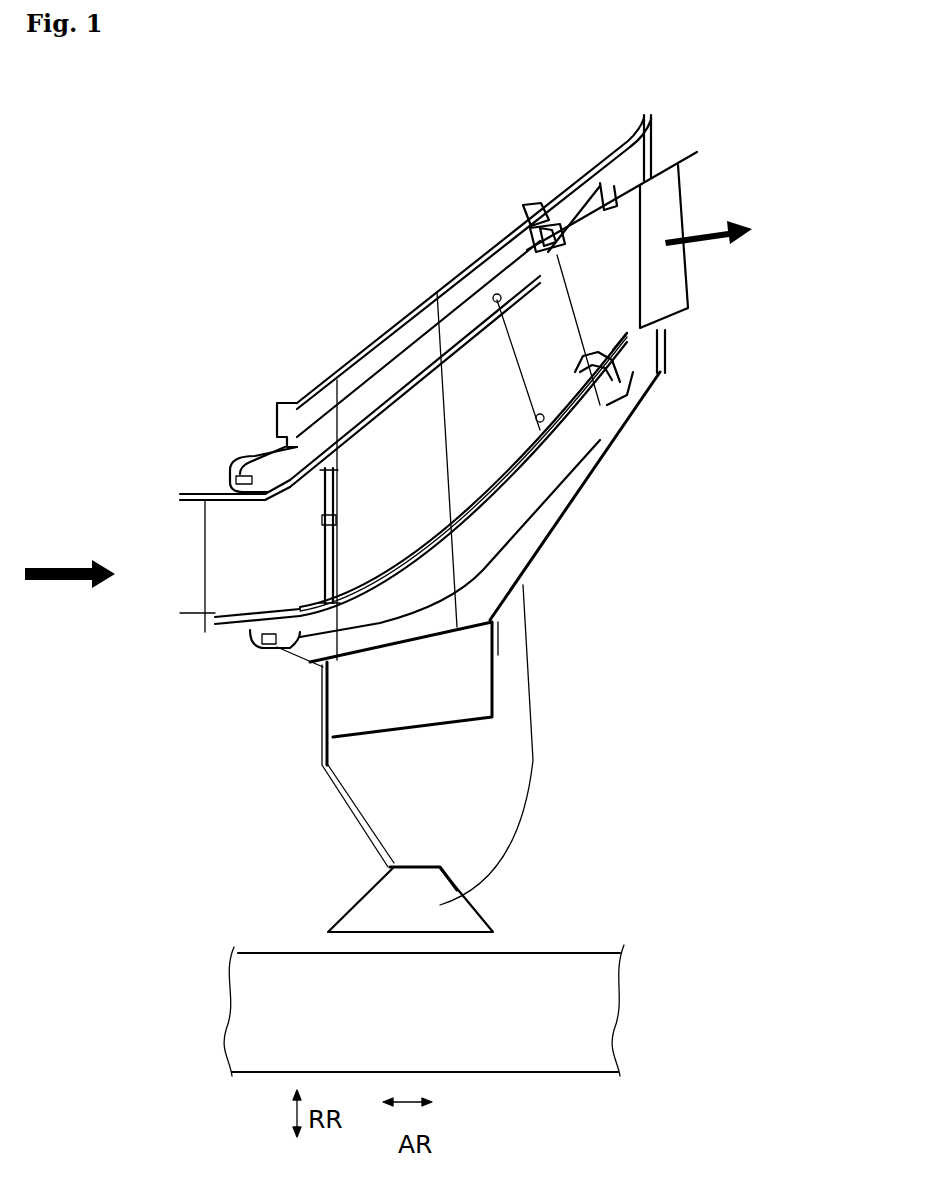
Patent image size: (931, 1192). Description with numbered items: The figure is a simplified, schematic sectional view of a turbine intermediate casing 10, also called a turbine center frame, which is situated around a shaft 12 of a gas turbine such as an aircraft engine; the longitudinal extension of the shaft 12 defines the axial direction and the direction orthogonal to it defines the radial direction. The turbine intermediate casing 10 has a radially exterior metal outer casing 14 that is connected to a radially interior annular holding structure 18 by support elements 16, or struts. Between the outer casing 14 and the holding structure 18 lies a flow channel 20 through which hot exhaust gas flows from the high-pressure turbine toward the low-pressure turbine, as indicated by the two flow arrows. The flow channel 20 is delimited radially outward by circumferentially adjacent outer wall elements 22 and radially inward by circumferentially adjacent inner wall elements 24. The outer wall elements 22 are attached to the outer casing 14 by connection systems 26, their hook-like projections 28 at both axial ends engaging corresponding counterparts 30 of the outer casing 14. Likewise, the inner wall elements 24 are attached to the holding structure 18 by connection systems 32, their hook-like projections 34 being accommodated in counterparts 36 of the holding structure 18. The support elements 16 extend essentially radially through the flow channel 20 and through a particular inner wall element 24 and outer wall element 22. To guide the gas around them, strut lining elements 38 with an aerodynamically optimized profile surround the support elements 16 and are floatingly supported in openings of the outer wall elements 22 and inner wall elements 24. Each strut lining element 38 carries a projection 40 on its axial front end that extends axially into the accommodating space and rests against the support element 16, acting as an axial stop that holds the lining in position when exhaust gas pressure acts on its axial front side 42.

The turbine intermediate casing 10 is at (286, 292).
The shaft 12 is at (570, 1030).
The outer casing 14 is at (459, 273).
The support elements 16 is at (433, 470).
The annular holding structure 18 is at (458, 700).
The flow channel 20 is at (248, 568).
The outer wall elements 22 is at (427, 363).
The inner wall elements 24 is at (557, 553).
The connection systems 26 is at (227, 473).
The hook-like projections 28 is at (230, 495).
The counterparts 30 is at (235, 480).
The connection systems 32 is at (250, 647).
The hook-like projections 34 is at (270, 645).
The counterparts 36 is at (233, 628).
The strut lining elements 38 is at (518, 514).
The projection 40 is at (343, 533).
The axial front side 42 is at (322, 514).